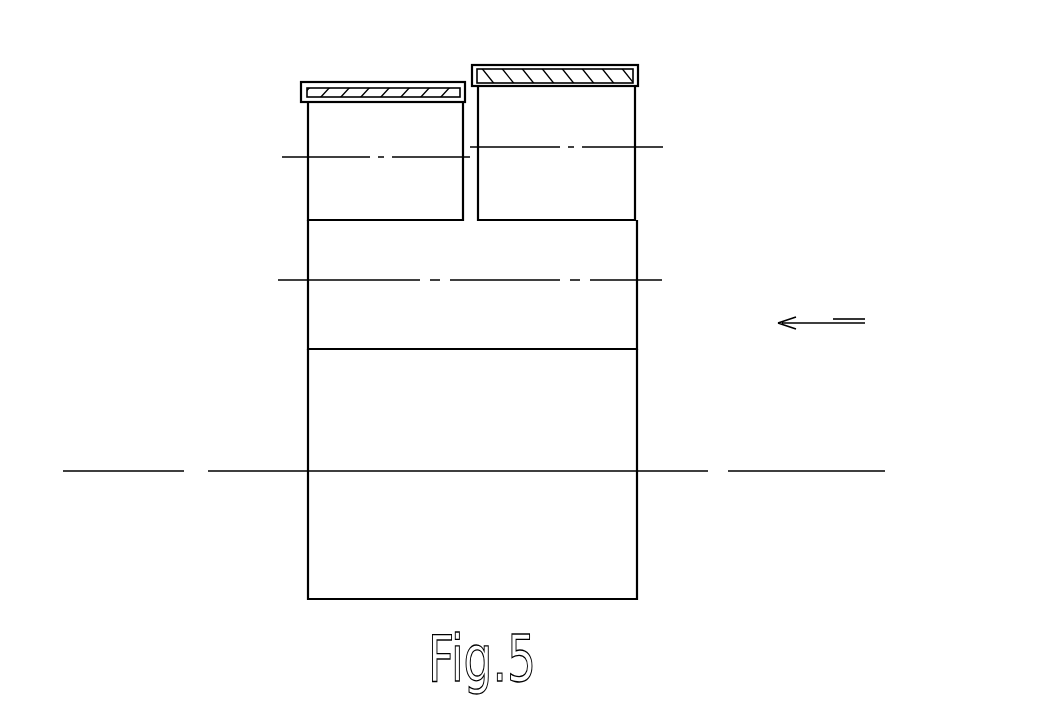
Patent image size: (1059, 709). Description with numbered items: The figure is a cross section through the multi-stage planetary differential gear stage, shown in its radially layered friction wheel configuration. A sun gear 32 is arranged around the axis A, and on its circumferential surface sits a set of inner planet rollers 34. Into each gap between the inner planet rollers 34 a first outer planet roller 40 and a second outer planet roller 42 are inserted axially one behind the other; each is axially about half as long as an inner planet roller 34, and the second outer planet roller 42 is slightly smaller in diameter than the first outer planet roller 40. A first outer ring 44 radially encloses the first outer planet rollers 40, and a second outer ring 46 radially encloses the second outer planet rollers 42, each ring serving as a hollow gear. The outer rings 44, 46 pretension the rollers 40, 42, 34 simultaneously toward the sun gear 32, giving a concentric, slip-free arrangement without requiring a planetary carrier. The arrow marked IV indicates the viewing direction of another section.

The sun gear 32 is at (612, 418).
The inner planet rollers 34 is at (612, 258).
The first outer planet roller 40 is at (610, 183).
The second outer planet roller 42 is at (335, 182).
The first outer ring 44 is at (658, 70).
The second outer ring 46 is at (283, 91).
The axis A is at (116, 473).
The view direction IV is at (821, 308).